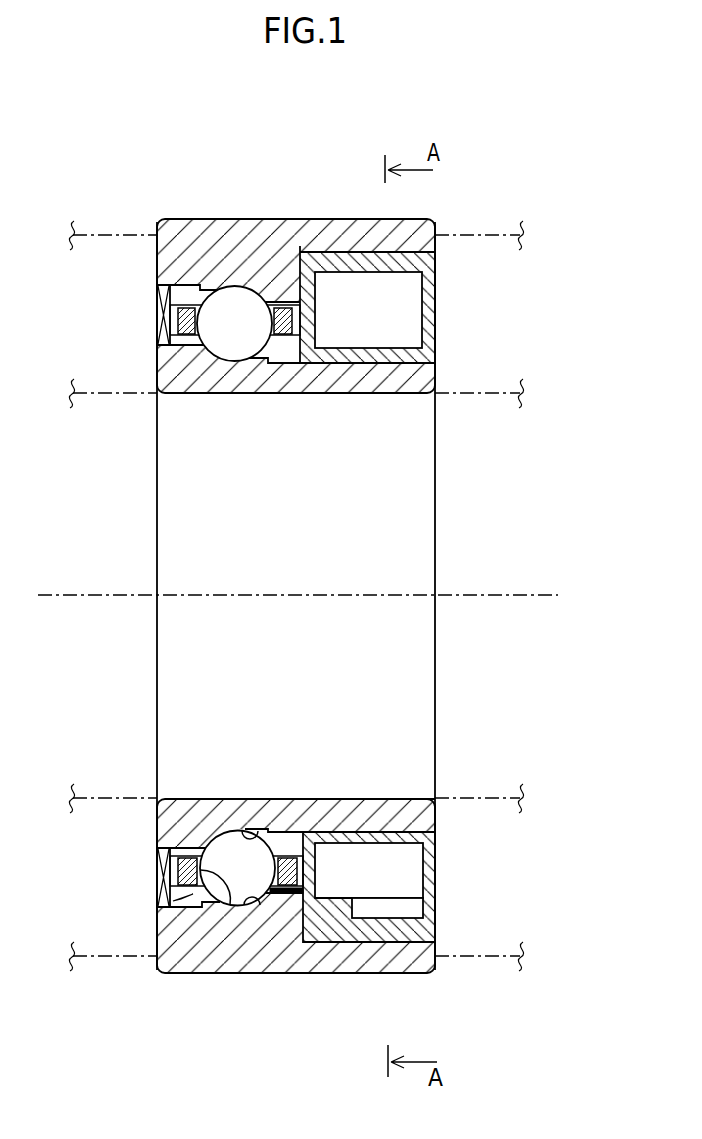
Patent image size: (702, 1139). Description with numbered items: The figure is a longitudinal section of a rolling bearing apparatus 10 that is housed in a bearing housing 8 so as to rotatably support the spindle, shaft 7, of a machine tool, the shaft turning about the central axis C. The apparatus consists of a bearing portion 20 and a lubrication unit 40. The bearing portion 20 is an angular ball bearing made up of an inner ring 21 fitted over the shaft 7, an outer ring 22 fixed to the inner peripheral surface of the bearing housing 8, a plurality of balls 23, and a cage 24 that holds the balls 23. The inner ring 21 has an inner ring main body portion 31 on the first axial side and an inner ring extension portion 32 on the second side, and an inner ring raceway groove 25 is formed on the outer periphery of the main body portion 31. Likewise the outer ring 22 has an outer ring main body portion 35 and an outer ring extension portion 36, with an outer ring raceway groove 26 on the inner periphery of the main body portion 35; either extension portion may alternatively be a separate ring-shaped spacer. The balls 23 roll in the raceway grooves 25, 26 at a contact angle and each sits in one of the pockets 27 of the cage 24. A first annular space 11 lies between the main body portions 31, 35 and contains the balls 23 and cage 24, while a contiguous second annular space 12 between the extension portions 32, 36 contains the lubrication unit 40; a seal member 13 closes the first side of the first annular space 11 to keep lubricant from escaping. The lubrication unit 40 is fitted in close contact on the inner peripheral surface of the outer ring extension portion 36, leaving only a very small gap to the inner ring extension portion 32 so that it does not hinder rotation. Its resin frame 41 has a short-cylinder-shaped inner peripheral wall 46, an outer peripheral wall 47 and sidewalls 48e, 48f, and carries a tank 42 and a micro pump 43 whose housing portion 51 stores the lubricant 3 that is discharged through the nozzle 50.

The rolling bearing apparatus 10 is at (436, 217).
The bearing portion 20 is at (231, 217).
The outer ring 22 is at (178, 248).
The inner ring 21 is at (200, 376).
The balls 23 is at (240, 345).
The cage 24 is at (163, 317).
The lubrication unit 40 is at (343, 250).
The tank 42 is at (407, 330).
The sidewall 48e is at (294, 245).
The sidewall 48f is at (428, 290).
The bearing housing 8 is at (494, 237).
The shaft 7 is at (494, 390).
The lubricant 3 is at (376, 323).
The rotation axis C is at (486, 593).
The inner ring main body portion 31 is at (182, 808).
The inner ring extension portion 32 is at (377, 808).
The frame 41 is at (440, 857).
The inner peripheral wall 46 is at (407, 835).
The housing portion 51 is at (350, 858).
The outer peripheral wall 47 is at (411, 932).
The pump 43 is at (335, 905).
The outer ring main body portion 35 is at (172, 955).
The outer ring extension portion 36 is at (380, 957).
The nozzle 50 is at (287, 894).
The seal member 13 is at (160, 877).
The first annular space 11 is at (160, 910).
The second annular space 12 is at (439, 908).
The inner ring raceway groove 25 is at (251, 836).
The pockets 27 is at (214, 908).
The outer ring raceway groove 26 is at (252, 906).